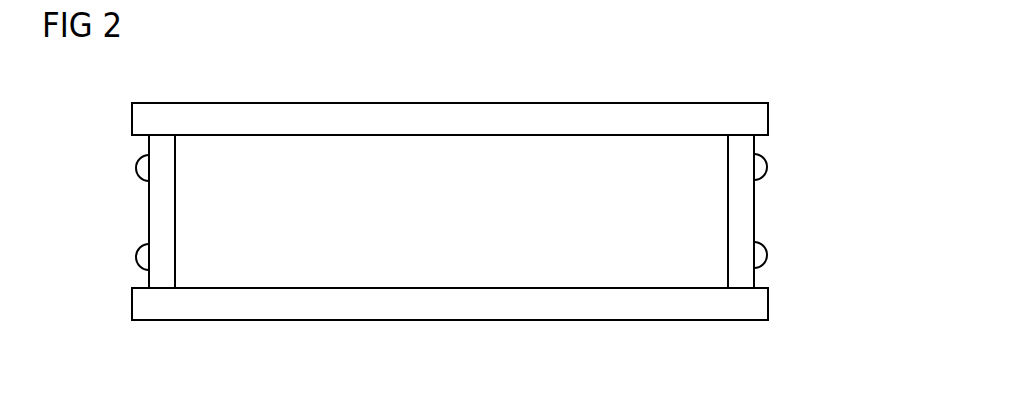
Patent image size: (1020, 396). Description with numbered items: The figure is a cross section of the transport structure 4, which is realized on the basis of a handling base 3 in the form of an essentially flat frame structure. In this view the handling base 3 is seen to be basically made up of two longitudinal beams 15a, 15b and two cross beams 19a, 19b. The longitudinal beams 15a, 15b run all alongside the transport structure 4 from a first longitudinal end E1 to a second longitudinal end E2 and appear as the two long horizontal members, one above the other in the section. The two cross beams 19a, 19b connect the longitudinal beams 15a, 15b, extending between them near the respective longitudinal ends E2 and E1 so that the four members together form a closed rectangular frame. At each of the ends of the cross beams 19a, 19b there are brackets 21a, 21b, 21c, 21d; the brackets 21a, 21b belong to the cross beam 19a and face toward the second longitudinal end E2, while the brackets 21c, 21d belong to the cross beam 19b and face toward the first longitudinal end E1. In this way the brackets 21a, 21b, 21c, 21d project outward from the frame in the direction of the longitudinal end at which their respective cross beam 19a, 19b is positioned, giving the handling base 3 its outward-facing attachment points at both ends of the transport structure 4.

The handling base 3 is at (685, 78).
The transport structure 4 is at (451, 212).
The longitudinal beam 15a is at (458, 113).
The longitudinal beam 15b is at (437, 305).
The cross beam 19a is at (153, 201).
The cross beam 19b is at (754, 202).
The bracket 21a is at (146, 168).
The bracket 21b is at (146, 257).
The bracket 21c is at (758, 167).
The bracket 21d is at (758, 255).
The first longitudinal end E1 is at (808, 137).
The second longitudinal end E2 is at (108, 140).